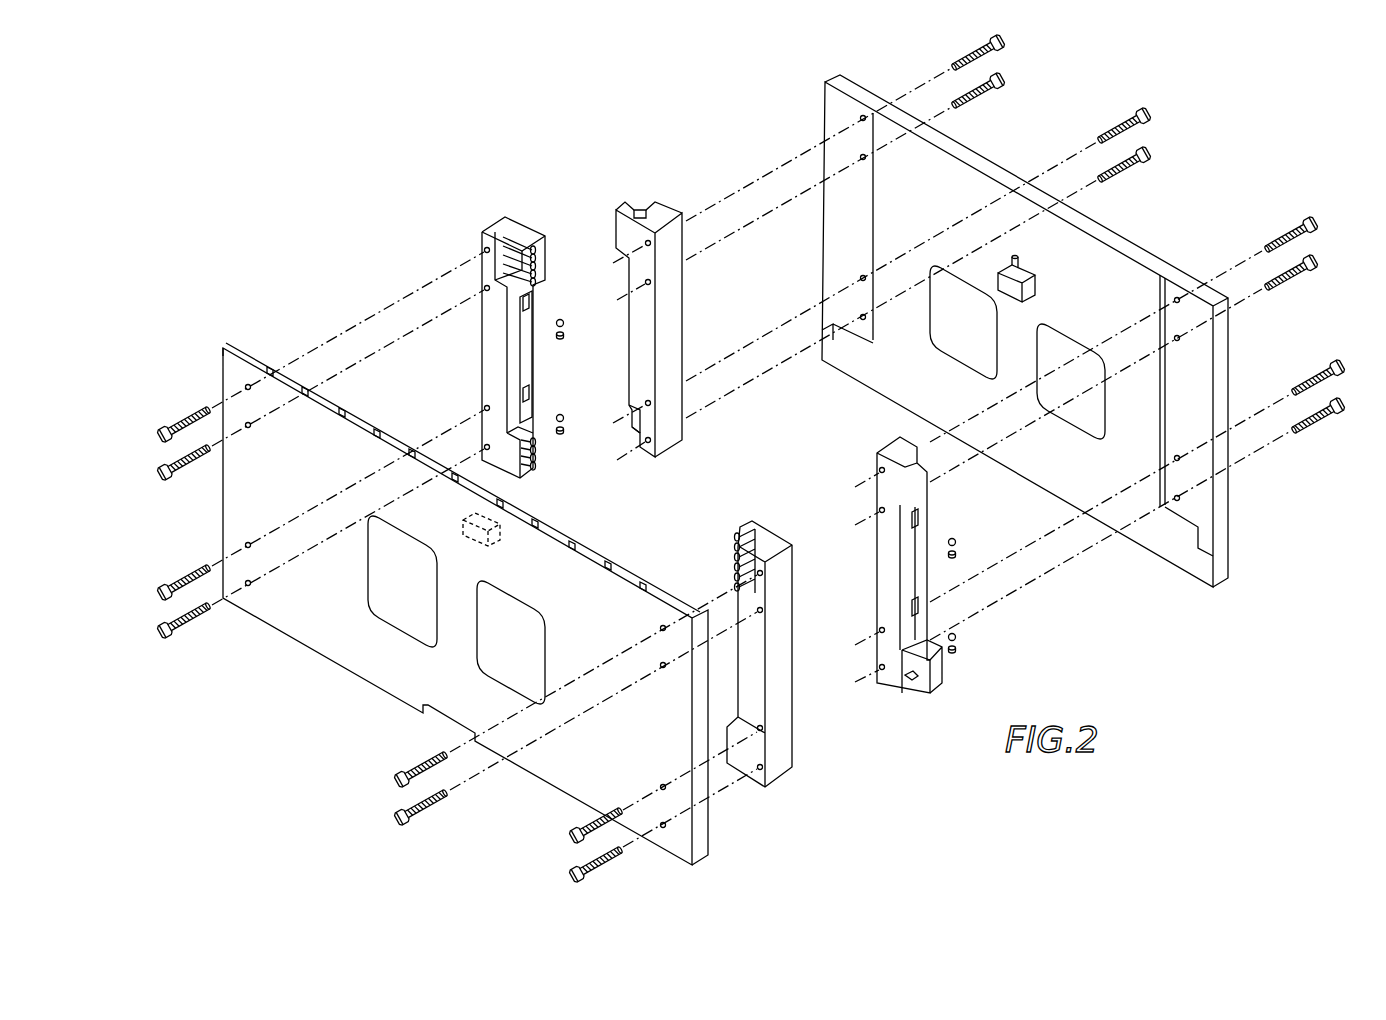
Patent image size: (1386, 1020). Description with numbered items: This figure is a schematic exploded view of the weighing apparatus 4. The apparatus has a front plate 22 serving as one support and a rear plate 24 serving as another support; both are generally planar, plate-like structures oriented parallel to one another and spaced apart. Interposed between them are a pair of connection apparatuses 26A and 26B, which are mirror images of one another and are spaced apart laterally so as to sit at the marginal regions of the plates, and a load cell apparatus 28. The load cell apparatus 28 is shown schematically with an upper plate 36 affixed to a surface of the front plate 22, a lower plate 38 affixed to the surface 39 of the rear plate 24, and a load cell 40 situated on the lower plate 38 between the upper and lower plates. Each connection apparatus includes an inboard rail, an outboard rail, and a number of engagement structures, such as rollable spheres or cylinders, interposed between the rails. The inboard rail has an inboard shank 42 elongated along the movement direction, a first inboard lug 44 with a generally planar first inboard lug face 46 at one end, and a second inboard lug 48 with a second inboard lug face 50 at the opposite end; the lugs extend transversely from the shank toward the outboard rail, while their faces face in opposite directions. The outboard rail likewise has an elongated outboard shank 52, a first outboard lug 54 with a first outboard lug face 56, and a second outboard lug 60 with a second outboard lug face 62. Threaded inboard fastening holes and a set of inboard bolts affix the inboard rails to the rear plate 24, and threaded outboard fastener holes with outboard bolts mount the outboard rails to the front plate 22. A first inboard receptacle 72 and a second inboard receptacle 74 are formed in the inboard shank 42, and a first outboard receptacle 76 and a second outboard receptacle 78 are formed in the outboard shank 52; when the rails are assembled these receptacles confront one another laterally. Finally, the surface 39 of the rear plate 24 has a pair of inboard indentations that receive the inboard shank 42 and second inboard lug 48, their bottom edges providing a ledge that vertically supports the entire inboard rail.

The weighing apparatus 4 is at (1210, 190).
The front plate 22 is at (297, 618).
The rear plate 24 is at (882, 372).
The connection apparatus 26A is at (560, 183).
The connection apparatus 26B is at (875, 730).
The load cell apparatus 28 is at (1078, 246).
The upper plate 36 is at (462, 522).
The lower plate 38 is at (1030, 290).
The surface 39 is at (957, 183).
The load cell 40 is at (1027, 248).
The inboard shank 42 is at (675, 392).
The first inboard lug 44 is at (624, 207).
The first inboard lug face 46 is at (640, 207).
The second inboard lug 48 is at (631, 404).
The second inboard lug face 50 is at (632, 427).
The outboard shank 52 is at (480, 330).
The first outboard lug 54 is at (542, 239).
The first outboard lug face 56 is at (497, 228).
The second outboard lug 60 is at (558, 470).
The second outboard lug face 62 is at (484, 406).
The first inboard receptacle 72 is at (920, 520).
The second inboard receptacle 74 is at (918, 625).
The first outboard receptacle 76 is at (530, 298).
The second outboard receptacle 78 is at (531, 392).